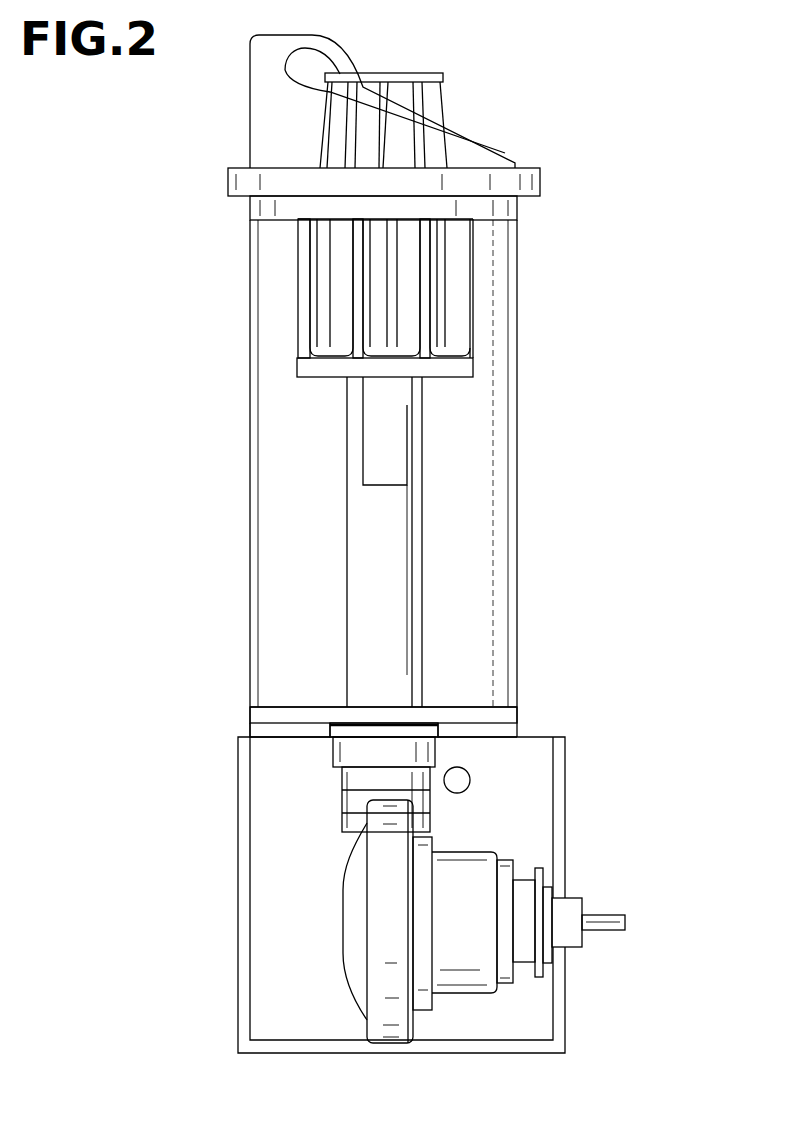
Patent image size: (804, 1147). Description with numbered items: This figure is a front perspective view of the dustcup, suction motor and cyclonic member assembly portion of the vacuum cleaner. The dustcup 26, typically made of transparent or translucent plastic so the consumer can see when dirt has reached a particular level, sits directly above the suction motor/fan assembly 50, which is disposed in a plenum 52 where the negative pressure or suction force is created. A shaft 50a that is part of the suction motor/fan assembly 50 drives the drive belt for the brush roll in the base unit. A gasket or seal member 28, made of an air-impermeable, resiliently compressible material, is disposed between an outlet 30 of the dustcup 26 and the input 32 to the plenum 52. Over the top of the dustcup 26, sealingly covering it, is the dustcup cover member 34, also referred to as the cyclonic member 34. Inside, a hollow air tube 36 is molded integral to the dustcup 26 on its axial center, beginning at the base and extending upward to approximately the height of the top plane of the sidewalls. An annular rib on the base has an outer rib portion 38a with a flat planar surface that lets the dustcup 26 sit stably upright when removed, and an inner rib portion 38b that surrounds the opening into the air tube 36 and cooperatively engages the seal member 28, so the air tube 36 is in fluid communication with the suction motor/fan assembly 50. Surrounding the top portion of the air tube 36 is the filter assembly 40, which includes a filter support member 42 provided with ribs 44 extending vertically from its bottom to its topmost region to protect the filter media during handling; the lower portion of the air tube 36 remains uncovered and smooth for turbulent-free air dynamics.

The dustcup 26 is at (517, 530).
The seal member 28 is at (330, 732).
The outlet 30 is at (443, 723).
The input 32 is at (437, 737).
The dustcup cover member 34 is at (505, 152).
The air tube 36 is at (358, 545).
The outer rib portion 38a is at (250, 730).
The inner rib portion 38b is at (330, 725).
The filter assembly 40 is at (470, 320).
The filter support member 42 is at (297, 370).
The ribs 44 is at (432, 278).
The suction motor/fan assembly 50 is at (500, 850).
The shaft 50a is at (605, 915).
The plenum 52 is at (263, 820).